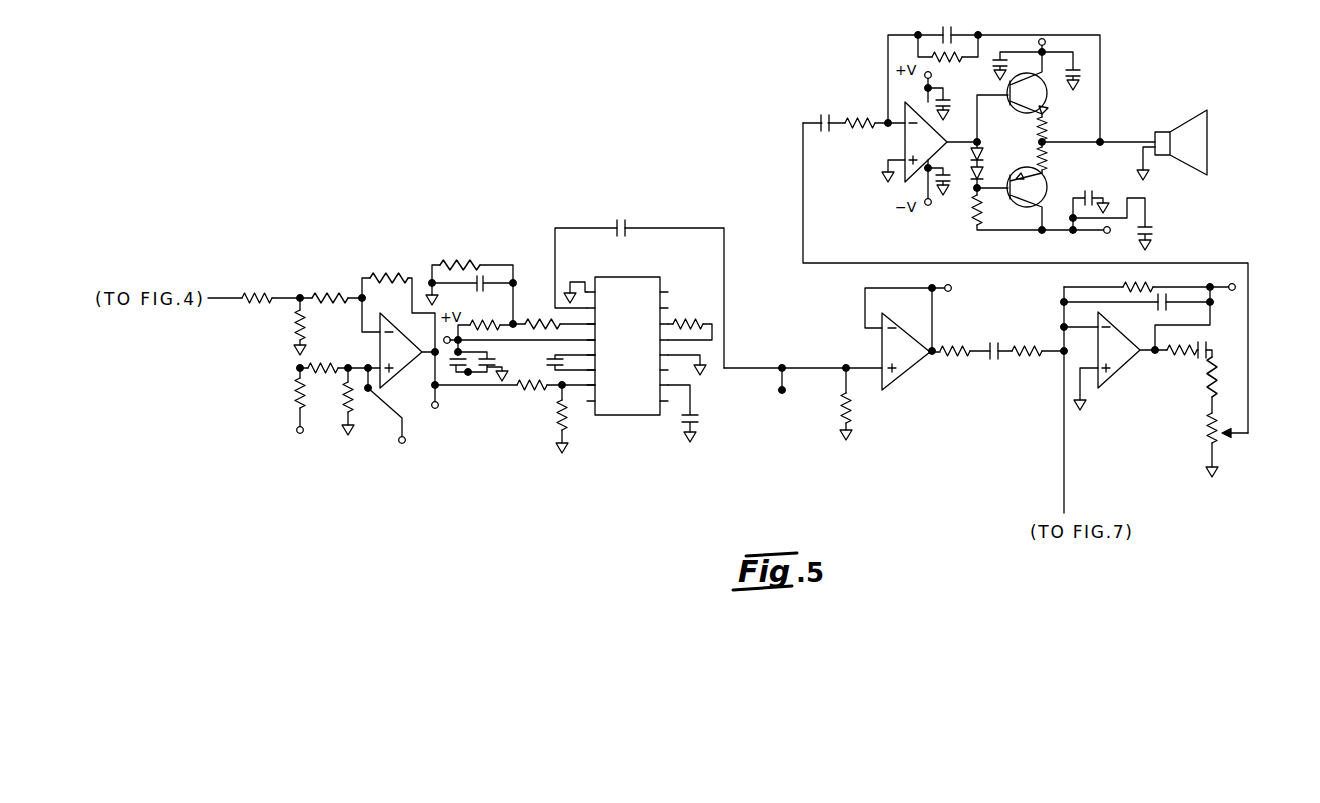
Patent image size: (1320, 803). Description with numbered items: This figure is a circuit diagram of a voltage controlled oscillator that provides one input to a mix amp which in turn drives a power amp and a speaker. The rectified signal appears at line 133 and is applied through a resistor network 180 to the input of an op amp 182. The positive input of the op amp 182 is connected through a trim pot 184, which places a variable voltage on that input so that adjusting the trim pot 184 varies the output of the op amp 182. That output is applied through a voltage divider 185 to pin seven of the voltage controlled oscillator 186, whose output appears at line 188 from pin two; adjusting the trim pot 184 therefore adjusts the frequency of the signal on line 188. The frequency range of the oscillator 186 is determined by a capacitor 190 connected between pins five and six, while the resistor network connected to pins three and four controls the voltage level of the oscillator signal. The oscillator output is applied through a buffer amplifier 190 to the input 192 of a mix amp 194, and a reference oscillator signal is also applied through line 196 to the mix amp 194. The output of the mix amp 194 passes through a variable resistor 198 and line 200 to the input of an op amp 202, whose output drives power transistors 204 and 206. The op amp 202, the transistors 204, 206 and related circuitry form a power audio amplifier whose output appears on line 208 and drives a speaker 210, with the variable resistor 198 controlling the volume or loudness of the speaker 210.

The line 133 is at (221, 292).
The resistor network 180 is at (320, 304).
The op amp 182 is at (402, 373).
The trim pot 184 is at (352, 395).
The voltage divider 185 is at (530, 390).
The voltage controlled oscillator 186 is at (618, 415).
The line 188 is at (585, 230).
The capacitor / buffer amplifier 190 is at (923, 375).
The input 192 is at (1047, 343).
The mix amp 194 is at (1130, 362).
The line 196 is at (1064, 470).
The variable resistor 198 is at (1217, 427).
The line 200 is at (1248, 337).
The op amp 202 is at (900, 140).
The power transistor 204 is at (1047, 103).
The power transistor 206 is at (1047, 182).
The line 208 is at (1103, 138).
The speaker 210 is at (1207, 113).